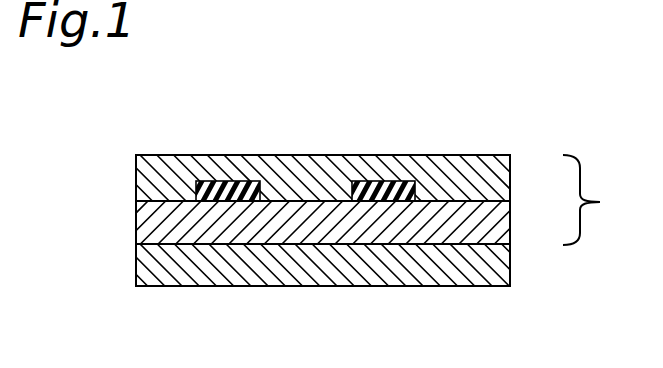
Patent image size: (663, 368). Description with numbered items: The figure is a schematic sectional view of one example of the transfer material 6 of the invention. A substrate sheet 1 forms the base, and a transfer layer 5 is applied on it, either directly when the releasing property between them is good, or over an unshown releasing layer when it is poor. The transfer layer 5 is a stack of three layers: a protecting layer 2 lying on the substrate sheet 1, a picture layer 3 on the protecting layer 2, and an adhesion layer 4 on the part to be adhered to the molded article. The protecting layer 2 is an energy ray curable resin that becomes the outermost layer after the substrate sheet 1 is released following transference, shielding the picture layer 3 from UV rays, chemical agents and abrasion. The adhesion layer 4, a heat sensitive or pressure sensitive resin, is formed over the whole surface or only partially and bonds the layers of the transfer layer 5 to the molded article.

The substrate sheet 1 is at (153, 263).
The protecting layer 2 is at (158, 213).
The picture layer 3 is at (392, 182).
The adhesion layer 4 is at (160, 170).
The transfer layer 5 is at (592, 200).
The transfer material 6 is at (272, 135).